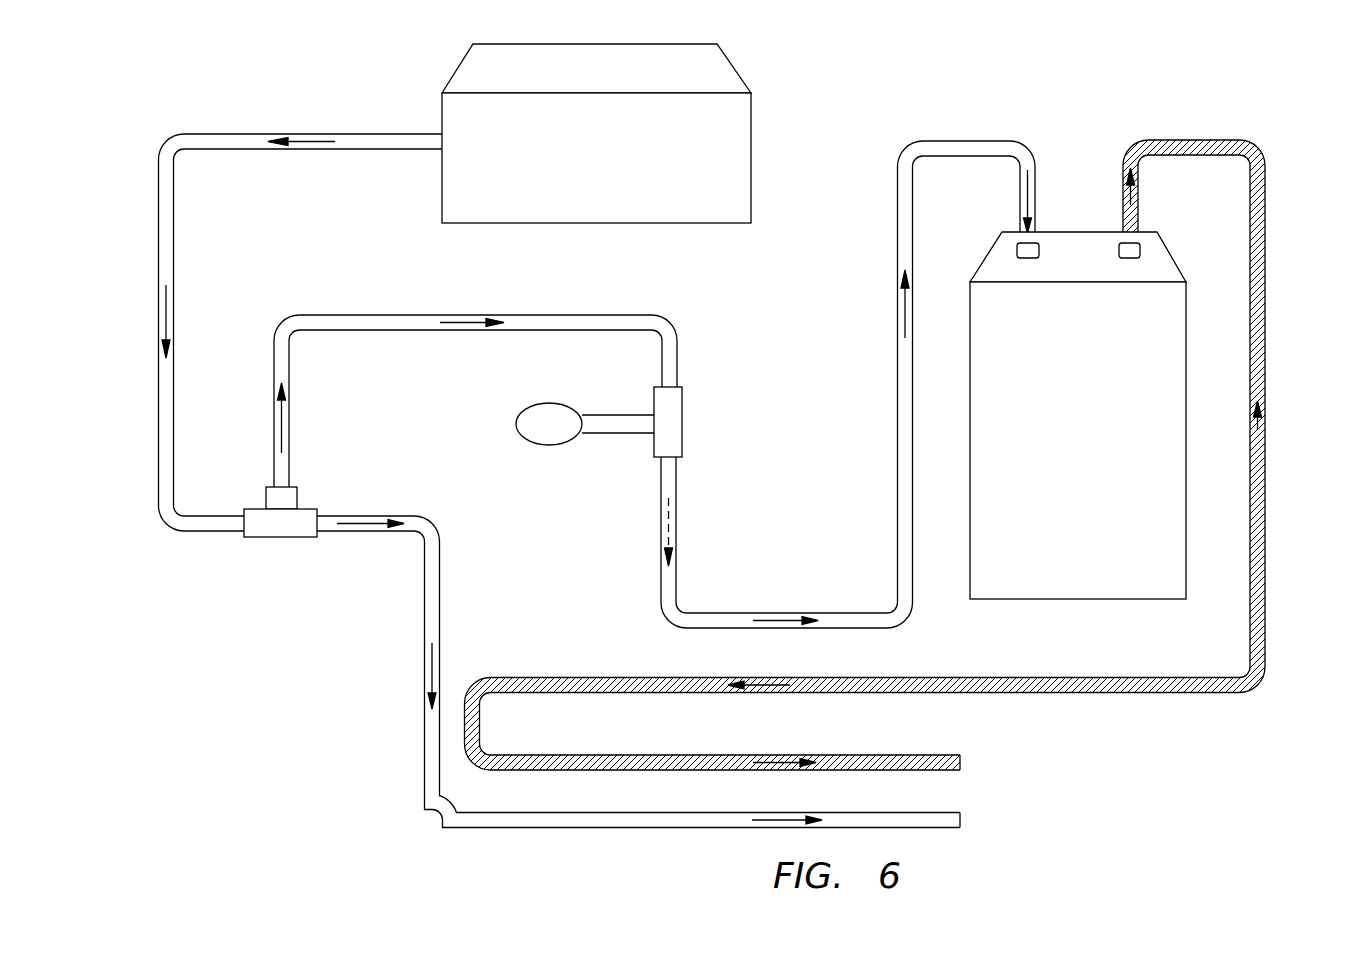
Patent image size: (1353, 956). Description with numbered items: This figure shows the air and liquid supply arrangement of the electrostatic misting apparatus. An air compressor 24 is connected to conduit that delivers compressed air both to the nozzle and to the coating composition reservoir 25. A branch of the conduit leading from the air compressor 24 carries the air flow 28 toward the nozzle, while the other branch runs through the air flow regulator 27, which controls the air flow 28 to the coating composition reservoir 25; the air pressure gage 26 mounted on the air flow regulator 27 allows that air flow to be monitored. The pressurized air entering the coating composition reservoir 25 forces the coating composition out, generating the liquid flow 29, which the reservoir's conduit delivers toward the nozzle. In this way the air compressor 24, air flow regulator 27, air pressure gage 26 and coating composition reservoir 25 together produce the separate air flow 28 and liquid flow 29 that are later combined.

The air compressor 24 is at (751, 152).
The coating composition reservoir 25 is at (1187, 350).
The air pressure gage 26 is at (532, 406).
The air flow regulator 27 is at (682, 433).
The air flow 28 is at (983, 820).
The liquid flow 29 is at (983, 762).